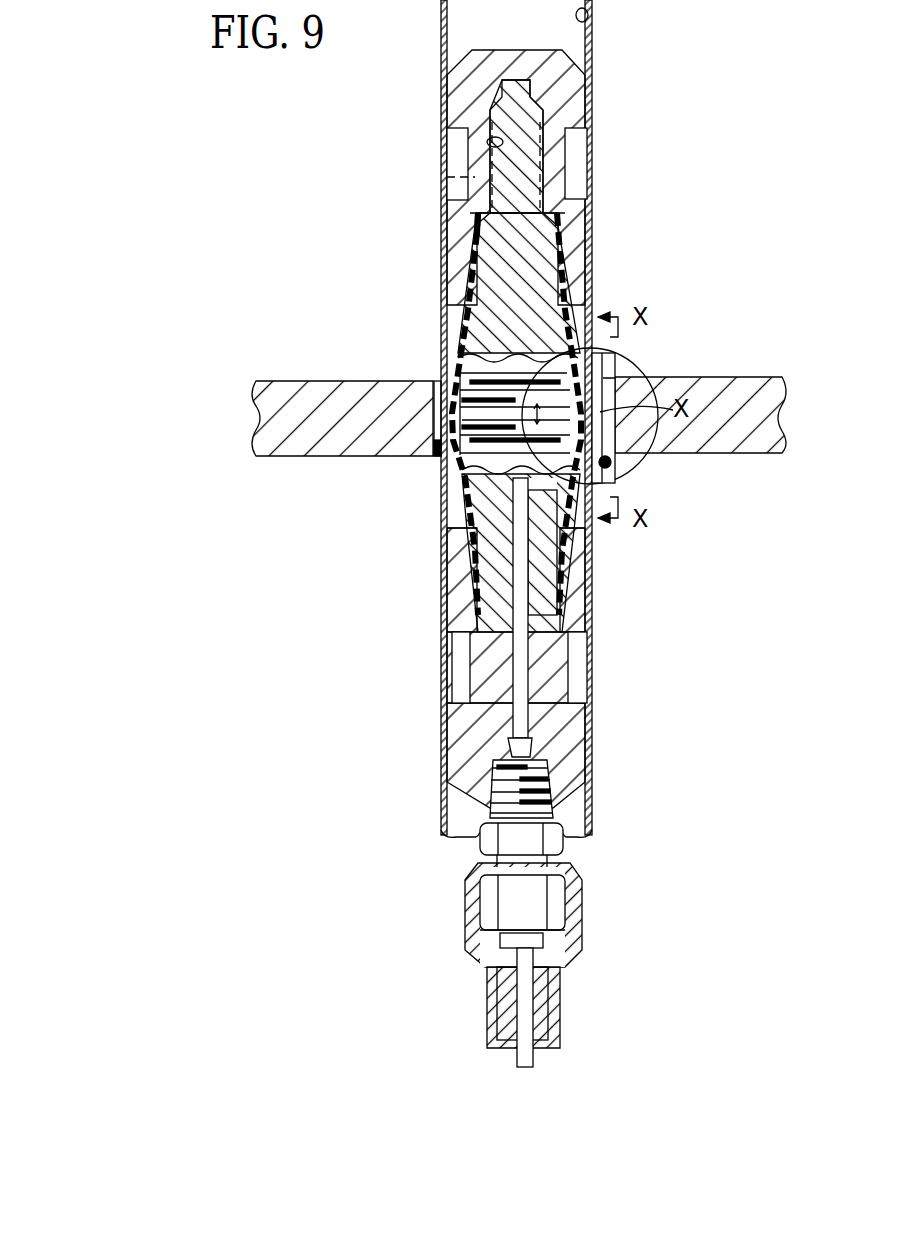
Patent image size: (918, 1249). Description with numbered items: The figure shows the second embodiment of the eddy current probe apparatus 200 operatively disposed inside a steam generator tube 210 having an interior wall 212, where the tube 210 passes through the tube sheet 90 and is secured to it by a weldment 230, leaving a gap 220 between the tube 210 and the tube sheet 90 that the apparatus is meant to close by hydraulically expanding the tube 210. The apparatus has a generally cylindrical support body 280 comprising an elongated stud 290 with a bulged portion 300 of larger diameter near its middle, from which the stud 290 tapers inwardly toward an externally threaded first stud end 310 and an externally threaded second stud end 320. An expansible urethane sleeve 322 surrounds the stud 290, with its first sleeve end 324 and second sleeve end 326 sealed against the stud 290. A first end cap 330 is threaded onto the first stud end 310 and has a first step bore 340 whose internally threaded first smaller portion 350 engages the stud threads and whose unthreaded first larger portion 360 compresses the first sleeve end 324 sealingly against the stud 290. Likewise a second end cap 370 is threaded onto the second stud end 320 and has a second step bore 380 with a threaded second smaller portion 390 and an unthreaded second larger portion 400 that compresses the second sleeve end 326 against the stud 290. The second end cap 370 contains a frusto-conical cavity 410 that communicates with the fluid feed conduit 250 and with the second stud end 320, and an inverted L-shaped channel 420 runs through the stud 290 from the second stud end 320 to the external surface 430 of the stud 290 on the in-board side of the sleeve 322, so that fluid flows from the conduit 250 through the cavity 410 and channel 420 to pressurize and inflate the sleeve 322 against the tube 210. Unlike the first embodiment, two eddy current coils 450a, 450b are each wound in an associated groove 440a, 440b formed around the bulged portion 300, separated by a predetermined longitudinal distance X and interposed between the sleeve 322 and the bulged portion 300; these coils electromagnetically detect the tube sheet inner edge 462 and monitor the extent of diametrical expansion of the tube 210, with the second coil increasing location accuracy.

The tube sheet 90 is at (747, 383).
The eddy current probe apparatus 200 is at (597, 847).
The steam generator tube 210 is at (593, 40).
The interior wall 212 is at (593, 12).
The gap 220 is at (605, 352).
The weldment 230 is at (605, 468).
The fluid feed conduit 250 is at (528, 1052).
The support body 280 is at (490, 258).
The stud 290 is at (530, 275).
The bulged portion 300 is at (438, 409).
The first stud end 310 is at (532, 173).
The second stud end 320 is at (547, 682).
The expansible sleeve 322 is at (470, 517).
The first sleeve end 324 is at (560, 243).
The second sleeve end 326 is at (565, 585).
The first end cap 330 is at (477, 82).
The first step bore 340 is at (487, 140).
The first smaller portion 350 is at (452, 177).
The first larger portion 360 is at (490, 232).
The second end cap 370 is at (568, 736).
The second step bore 380 is at (540, 648).
The second smaller portion 390 is at (497, 657).
The second larger portion 400 is at (480, 586).
The frusto-conical cavity 410 is at (560, 785).
The channel 420 is at (515, 578).
The external surface 430 is at (470, 490).
The groove 440a is at (505, 353).
The groove 440b is at (458, 463).
The eddy current coil 450a is at (460, 363).
The eddy current coil 450b is at (445, 436).
The tube sheet inner edge 462 is at (433, 380).